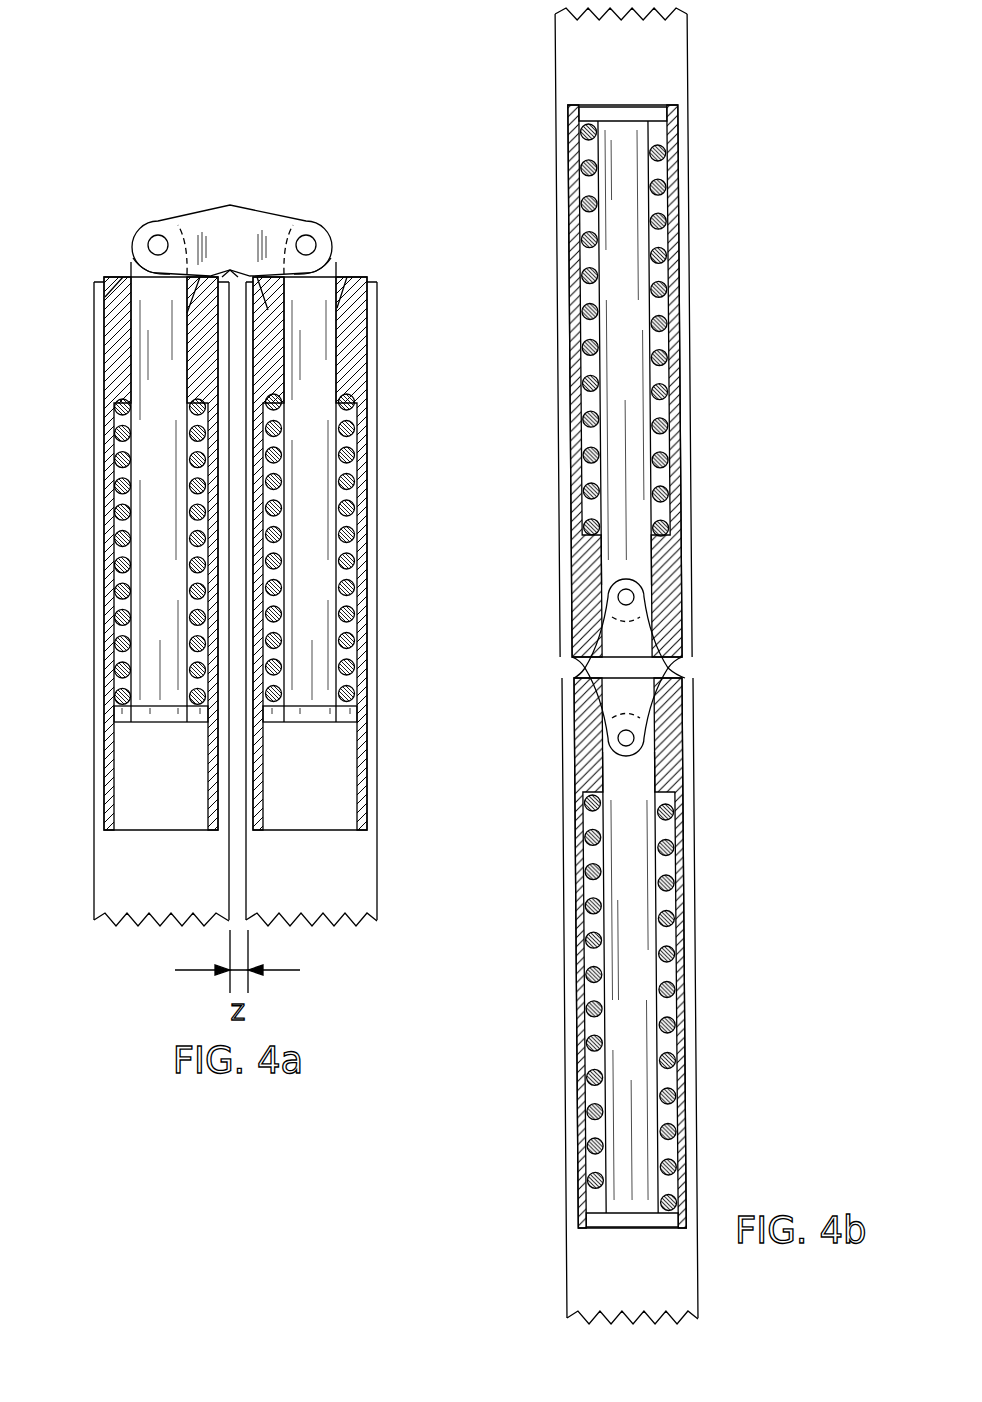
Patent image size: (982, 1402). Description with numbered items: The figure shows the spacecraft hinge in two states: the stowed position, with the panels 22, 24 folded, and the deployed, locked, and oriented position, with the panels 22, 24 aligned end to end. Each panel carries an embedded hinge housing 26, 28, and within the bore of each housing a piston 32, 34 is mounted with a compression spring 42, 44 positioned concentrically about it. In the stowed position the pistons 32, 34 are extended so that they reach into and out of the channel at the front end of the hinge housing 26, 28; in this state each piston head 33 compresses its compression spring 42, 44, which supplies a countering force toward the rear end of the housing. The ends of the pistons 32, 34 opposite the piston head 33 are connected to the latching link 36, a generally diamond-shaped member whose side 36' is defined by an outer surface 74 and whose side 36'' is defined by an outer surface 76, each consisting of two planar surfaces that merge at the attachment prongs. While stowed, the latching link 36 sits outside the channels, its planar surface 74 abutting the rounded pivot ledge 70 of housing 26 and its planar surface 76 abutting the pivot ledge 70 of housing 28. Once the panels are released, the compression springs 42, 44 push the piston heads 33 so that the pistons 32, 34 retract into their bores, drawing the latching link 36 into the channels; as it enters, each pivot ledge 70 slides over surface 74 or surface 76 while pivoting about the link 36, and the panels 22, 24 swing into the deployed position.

In FIG. 4A, the panel 22 is at (300, 882).
In FIG. 4B, the panel 22 is at (619, 1284).
In FIG. 4A, the panel 24 is at (150, 882).
In FIG. 4B, the panel 24 is at (607, 72).
In FIG. 4A, the hinge housing 26 is at (366, 362).
In FIG. 4A, the hinge housing 28 is at (104, 370).
In FIG. 4A, the piston 32 is at (297, 453).
In FIG. 4B, the piston 32 is at (617, 983).
In FIG. 4A, the piston head 33 is at (332, 722).
In FIG. 4A, the piston 34 is at (147, 453).
In FIG. 4B, the piston 34 is at (610, 378).
In FIG. 4A, the latching link 36 is at (232, 217).
In FIG. 4A, the side of latching link 36' is at (166, 227).
In FIG. 4A, the side of latching link 36'' is at (305, 227).
In FIG. 4A, the compression spring 42 is at (352, 533).
In FIG. 4B, the compression spring 42 is at (670, 847).
In FIG. 4A, the compression spring 44 is at (115, 513).
In FIG. 4B, the compression spring 44 is at (667, 190).
In FIG. 4A, the pivot ledge 70 is at (250, 275).
In FIG. 4B, the pivot ledge 70 is at (670, 668).
In FIG. 4A, the outer surface 74 is at (292, 274).
In FIG. 4A, the outer surface 76 is at (168, 274).